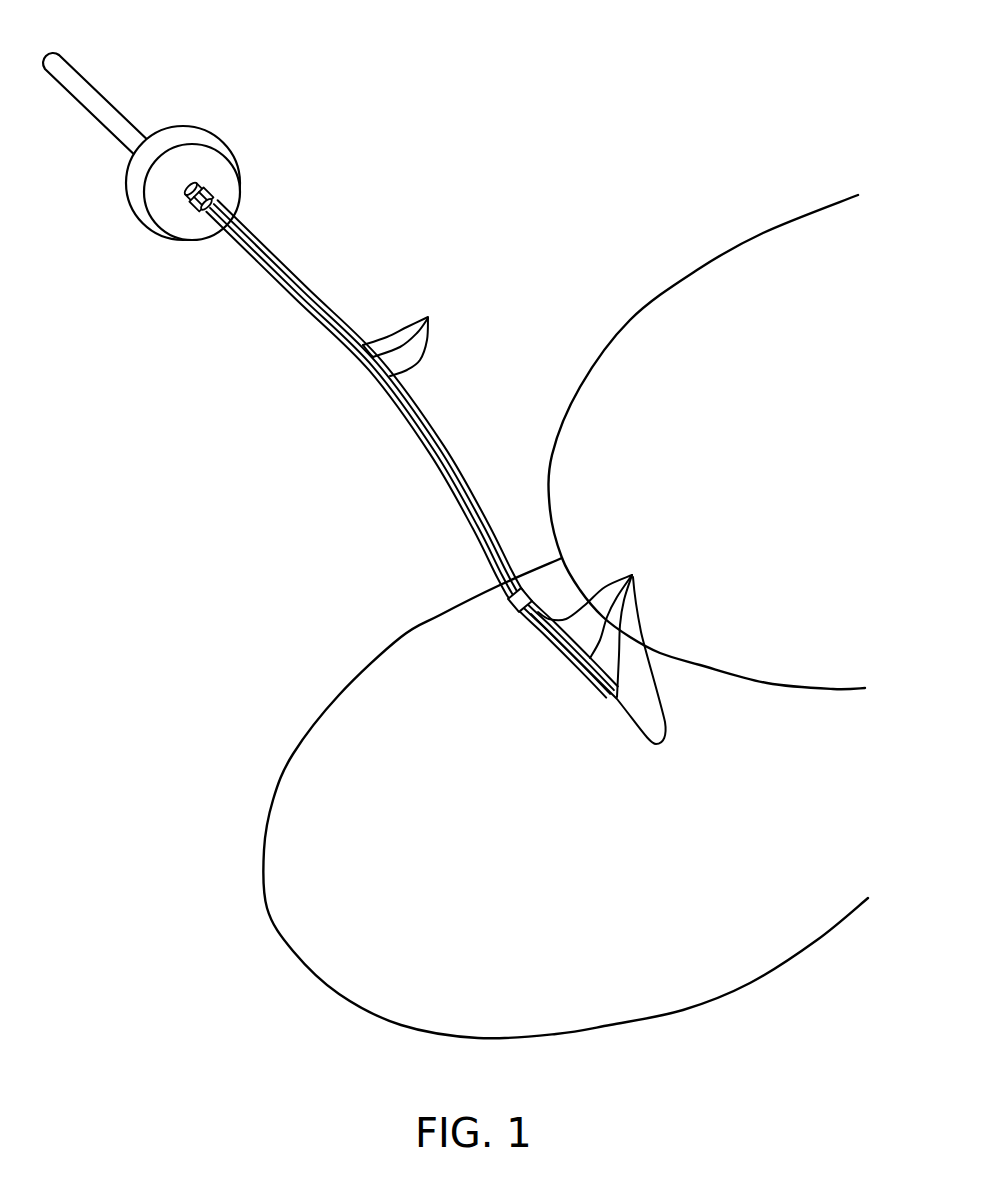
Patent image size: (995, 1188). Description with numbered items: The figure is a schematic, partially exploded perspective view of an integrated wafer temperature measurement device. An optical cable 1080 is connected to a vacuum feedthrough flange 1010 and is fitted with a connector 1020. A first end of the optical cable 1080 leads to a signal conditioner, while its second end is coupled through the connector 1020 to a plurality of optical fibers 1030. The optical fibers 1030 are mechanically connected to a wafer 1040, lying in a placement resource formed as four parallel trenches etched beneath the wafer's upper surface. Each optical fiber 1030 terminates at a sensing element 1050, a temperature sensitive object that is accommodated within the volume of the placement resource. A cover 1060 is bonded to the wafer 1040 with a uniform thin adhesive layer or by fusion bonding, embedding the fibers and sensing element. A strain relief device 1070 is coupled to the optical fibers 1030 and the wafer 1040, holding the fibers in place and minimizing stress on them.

The optical cable 1080 is at (114, 104).
The vacuum feedthrough flange 1010 is at (163, 216).
The connector 1020 is at (216, 194).
The optical fibers 1030 is at (409, 331).
The wafer 1040 is at (331, 792).
The sensing element 1050 is at (600, 647).
The cover 1060 is at (716, 277).
The strain relief device 1070 is at (512, 606).